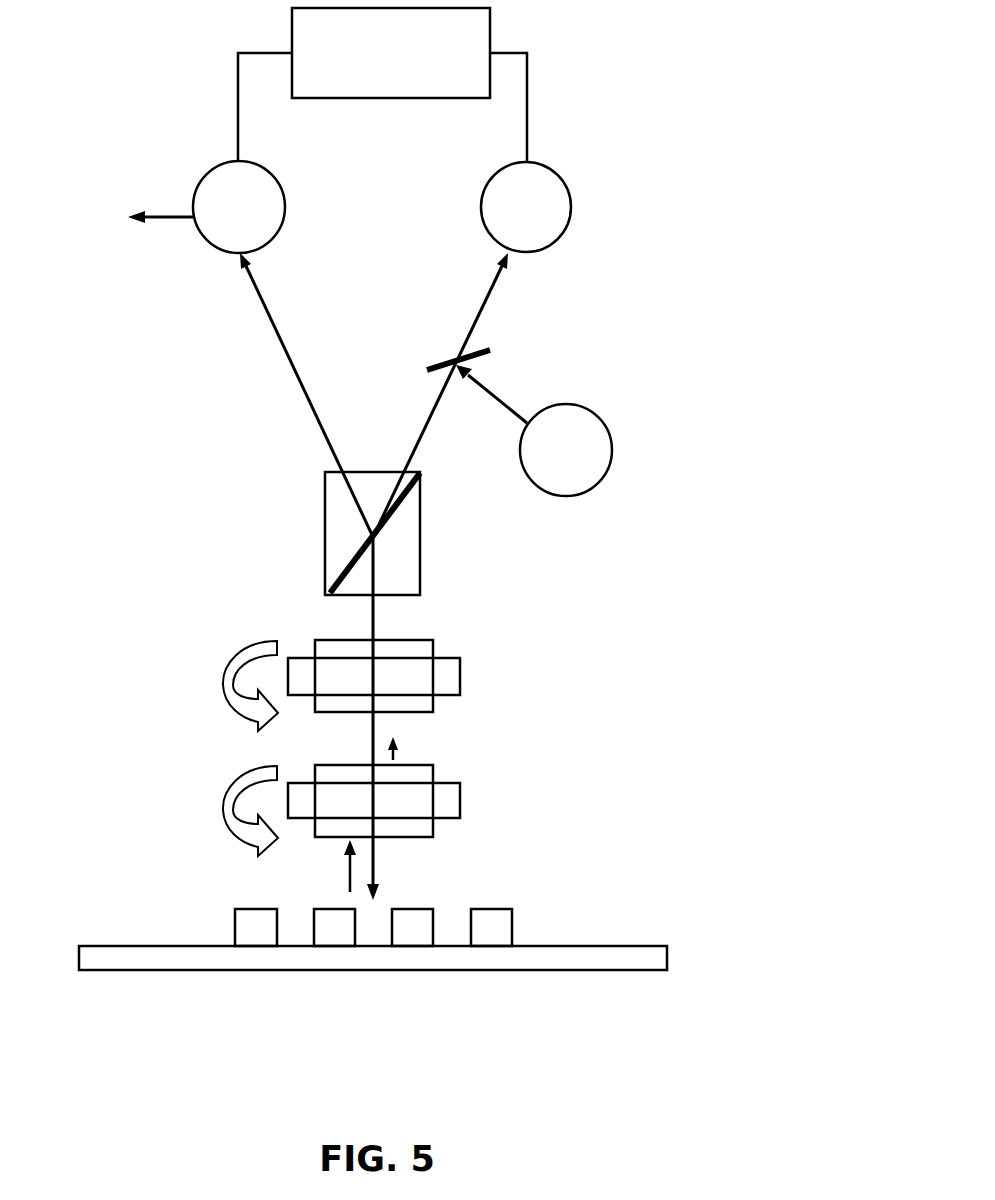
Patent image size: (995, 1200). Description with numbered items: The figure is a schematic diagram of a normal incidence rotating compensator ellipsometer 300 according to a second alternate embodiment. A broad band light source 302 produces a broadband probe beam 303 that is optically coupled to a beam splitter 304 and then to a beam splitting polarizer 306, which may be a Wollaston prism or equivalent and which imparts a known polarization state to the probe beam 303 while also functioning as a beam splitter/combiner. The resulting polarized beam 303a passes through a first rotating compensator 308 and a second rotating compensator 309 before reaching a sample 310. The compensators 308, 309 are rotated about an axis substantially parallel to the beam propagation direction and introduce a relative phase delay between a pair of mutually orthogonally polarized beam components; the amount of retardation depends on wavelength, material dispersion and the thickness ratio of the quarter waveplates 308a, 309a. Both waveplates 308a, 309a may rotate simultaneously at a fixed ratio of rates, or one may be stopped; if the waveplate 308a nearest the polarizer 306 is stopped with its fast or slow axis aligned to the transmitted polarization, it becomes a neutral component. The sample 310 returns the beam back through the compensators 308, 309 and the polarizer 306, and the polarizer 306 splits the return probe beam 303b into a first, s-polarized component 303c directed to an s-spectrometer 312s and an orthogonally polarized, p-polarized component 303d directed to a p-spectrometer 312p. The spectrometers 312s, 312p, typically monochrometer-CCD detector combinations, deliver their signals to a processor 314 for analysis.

The normal incidence ellipsometer 300 is at (727, 510).
The broad band light source 302 is at (600, 440).
The broadband probe beam 303 is at (492, 393).
The polarized beam 303a is at (373, 625).
The return probe beam 303b is at (347, 873).
The first component 303c is at (483, 310).
The orthogonally polarized return component 303d is at (292, 362).
The beam splitter 304 is at (440, 360).
The beam splitting polarizer 306 is at (322, 533).
The first rotating compensator 308 is at (460, 667).
The quarter waveplate 308a is at (420, 641).
The second rotating compensator 309 is at (460, 807).
The quarter waveplate 309a is at (430, 763).
The sample 310 is at (123, 946).
The p-spectrometer 312p is at (258, 160).
The s-spectrometer 312s is at (571, 190).
The processor 314 is at (417, 87).